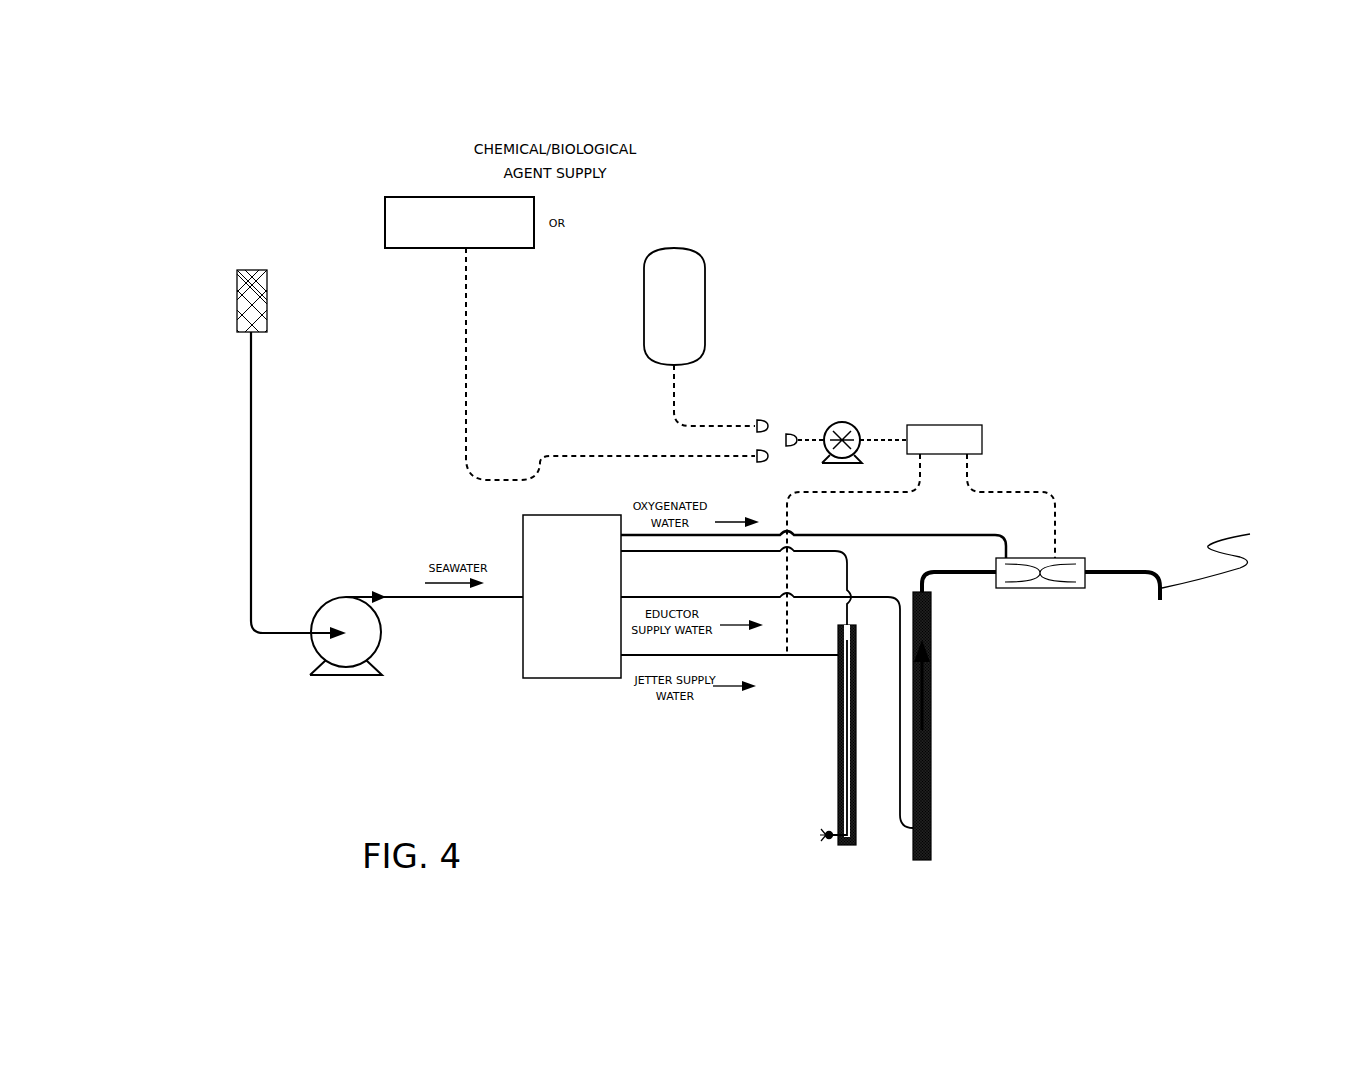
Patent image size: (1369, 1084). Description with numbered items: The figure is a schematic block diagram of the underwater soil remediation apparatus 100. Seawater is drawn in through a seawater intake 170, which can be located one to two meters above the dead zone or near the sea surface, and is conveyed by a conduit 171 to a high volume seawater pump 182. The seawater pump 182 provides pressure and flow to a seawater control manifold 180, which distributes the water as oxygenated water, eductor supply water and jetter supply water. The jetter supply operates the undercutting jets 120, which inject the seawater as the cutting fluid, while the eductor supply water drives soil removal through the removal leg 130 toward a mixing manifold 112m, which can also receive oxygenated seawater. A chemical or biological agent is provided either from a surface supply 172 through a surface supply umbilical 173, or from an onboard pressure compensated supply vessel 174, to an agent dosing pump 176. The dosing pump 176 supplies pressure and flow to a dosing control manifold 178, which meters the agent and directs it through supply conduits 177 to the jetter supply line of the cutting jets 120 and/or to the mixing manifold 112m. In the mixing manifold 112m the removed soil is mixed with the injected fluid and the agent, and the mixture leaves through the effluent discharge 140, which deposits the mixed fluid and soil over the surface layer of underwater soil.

The apparatus 100 is at (1031, 333).
The mixing manifold 112m is at (1073, 558).
The cutting jet 120 is at (838, 768).
The removal leg 130 is at (930, 767).
The effluent discharge 140 is at (1193, 582).
The seawater intake 170 is at (237, 307).
The conduit 171 is at (252, 440).
The surface supply 172 is at (432, 197).
The umbilical tube 173 is at (466, 323).
The onboard supply vessel 174 is at (705, 280).
The agent dosing pump 176 is at (858, 430).
The supply conduit 177 is at (855, 493).
The dosing control manifold 178 is at (958, 430).
The seawater control manifold 180 is at (569, 679).
The seawater pump 182 is at (330, 608).